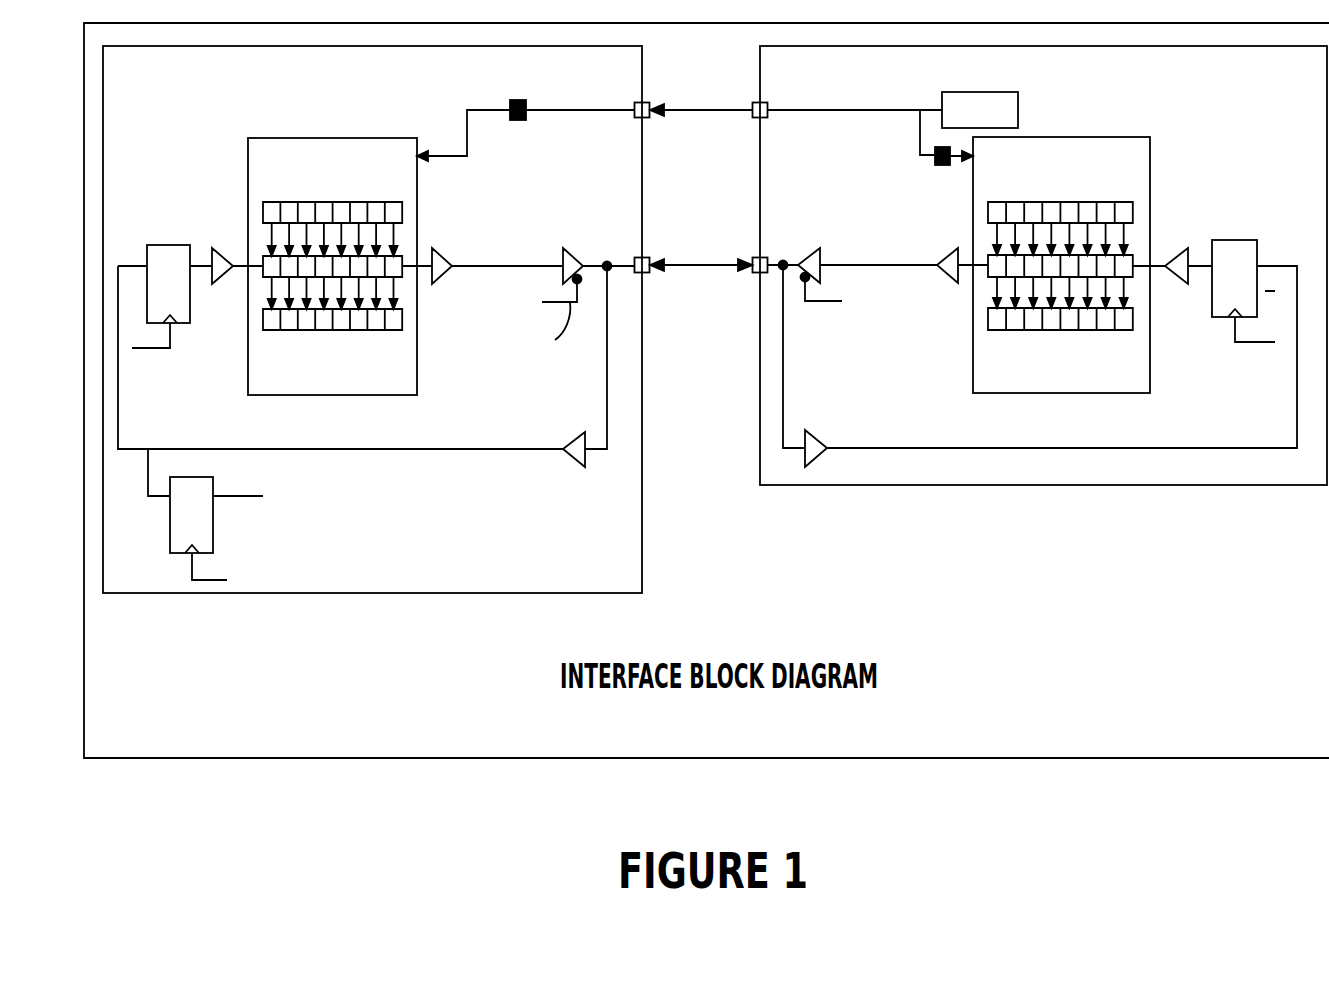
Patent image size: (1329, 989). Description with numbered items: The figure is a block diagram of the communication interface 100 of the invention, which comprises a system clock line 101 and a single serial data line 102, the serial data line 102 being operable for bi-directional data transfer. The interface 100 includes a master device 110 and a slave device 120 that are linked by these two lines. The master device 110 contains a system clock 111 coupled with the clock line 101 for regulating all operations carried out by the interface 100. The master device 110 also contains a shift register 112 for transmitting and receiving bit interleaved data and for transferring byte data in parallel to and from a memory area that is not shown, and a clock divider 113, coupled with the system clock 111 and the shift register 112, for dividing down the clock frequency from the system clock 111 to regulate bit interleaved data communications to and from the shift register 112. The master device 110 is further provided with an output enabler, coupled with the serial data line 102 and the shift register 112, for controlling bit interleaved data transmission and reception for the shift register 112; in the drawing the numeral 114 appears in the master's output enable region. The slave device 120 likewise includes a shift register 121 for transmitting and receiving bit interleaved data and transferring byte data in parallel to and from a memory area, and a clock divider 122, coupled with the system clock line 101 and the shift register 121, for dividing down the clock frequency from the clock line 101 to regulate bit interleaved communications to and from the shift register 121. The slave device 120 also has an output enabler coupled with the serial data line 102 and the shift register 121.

The interface 100 is at (1300, 742).
The system clock line 101 is at (701, 109).
The serial data line 102 is at (701, 265).
The master device 110 is at (1260, 110).
The system clock 111 is at (948, 92).
The shift register 112 is at (973, 377).
The clock divider 113 is at (935, 163).
The master output enable buffer 114 is at (826, 359).
The slave device 120 is at (387, 110).
The shift register 121 is at (248, 165).
The clock divider 122 is at (517, 120).